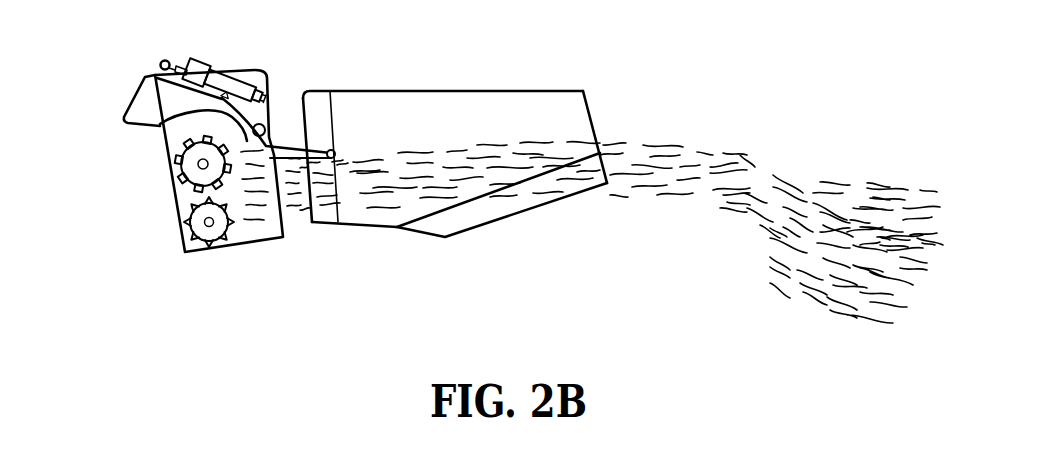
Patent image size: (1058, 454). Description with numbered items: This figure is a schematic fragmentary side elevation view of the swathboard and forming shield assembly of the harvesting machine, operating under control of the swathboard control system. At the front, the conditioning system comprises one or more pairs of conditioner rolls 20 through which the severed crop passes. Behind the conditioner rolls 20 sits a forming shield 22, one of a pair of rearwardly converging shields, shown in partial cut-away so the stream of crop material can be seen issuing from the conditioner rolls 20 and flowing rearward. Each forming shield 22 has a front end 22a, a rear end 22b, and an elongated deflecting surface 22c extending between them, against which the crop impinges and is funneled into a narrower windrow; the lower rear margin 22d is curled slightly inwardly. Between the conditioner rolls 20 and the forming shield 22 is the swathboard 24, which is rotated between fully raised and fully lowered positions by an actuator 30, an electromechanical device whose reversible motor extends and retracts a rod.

The conditioner rolls 20 is at (172, 170).
The windrow forming shields 22 is at (518, 172).
The front end 22a is at (303, 222).
The rear end 22b is at (598, 123).
The elongated deflecting surface 22c is at (565, 103).
The lower rear margin 22d is at (488, 210).
The swathboard 24 is at (285, 134).
The actuator 30 is at (225, 82).